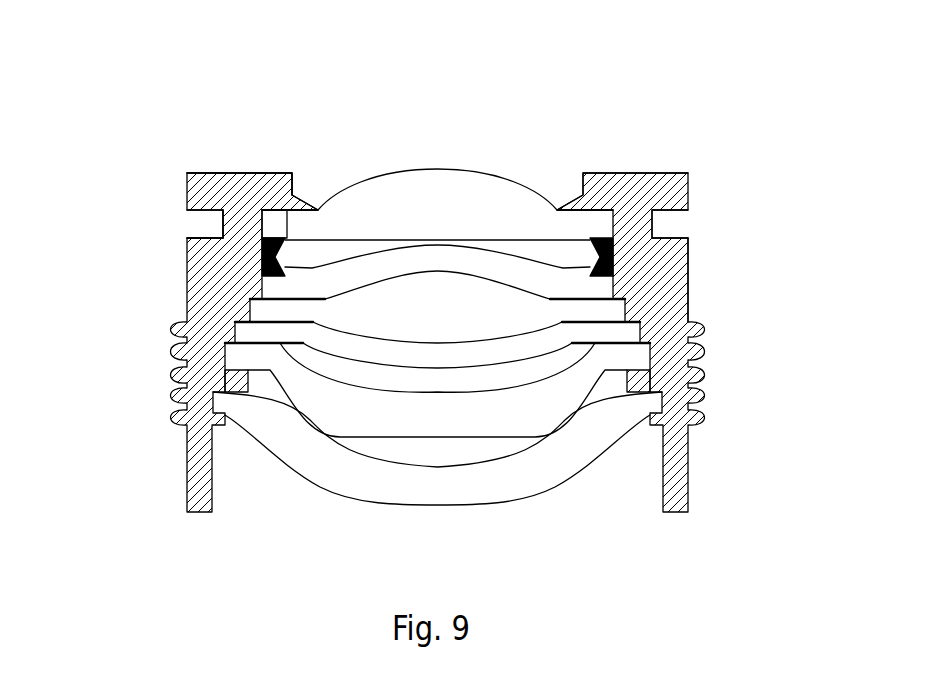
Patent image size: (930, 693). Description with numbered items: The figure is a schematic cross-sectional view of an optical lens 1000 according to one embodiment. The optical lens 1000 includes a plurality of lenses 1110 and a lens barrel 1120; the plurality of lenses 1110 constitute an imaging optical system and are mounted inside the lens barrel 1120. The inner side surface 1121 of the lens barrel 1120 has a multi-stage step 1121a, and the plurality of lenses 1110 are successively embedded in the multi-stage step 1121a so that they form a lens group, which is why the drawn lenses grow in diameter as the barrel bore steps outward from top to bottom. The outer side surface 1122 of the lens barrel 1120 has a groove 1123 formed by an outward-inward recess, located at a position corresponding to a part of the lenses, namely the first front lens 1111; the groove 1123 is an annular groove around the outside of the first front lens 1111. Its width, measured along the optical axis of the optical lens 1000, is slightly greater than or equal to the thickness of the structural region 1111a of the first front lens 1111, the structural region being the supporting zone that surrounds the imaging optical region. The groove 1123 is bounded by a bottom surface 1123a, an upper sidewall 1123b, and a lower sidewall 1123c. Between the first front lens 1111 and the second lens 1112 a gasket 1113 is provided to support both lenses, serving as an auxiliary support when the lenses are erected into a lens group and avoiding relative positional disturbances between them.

The optical lens 1000 is at (430, 70).
The plurality of lenses 1110 is at (575, 497).
The first front lens 1111 is at (480, 203).
The structural region of the first front lens 1111a is at (288, 222).
The second lens 1112 is at (385, 267).
The gasket 1113 is at (630, 200).
The lens barrel 1120 is at (705, 330).
The inner side surface of the lens barrel 1121 is at (652, 370).
The multi-stage step 1121a is at (228, 343).
The outer side surface of the lens barrel 1122 is at (690, 273).
The groove 1123 is at (667, 223).
The bottom surface of the groove 1123a is at (222, 218).
The upper sidewall of the groove 1123b is at (190, 208).
The lower sidewall of the groove 1123c is at (223, 237).